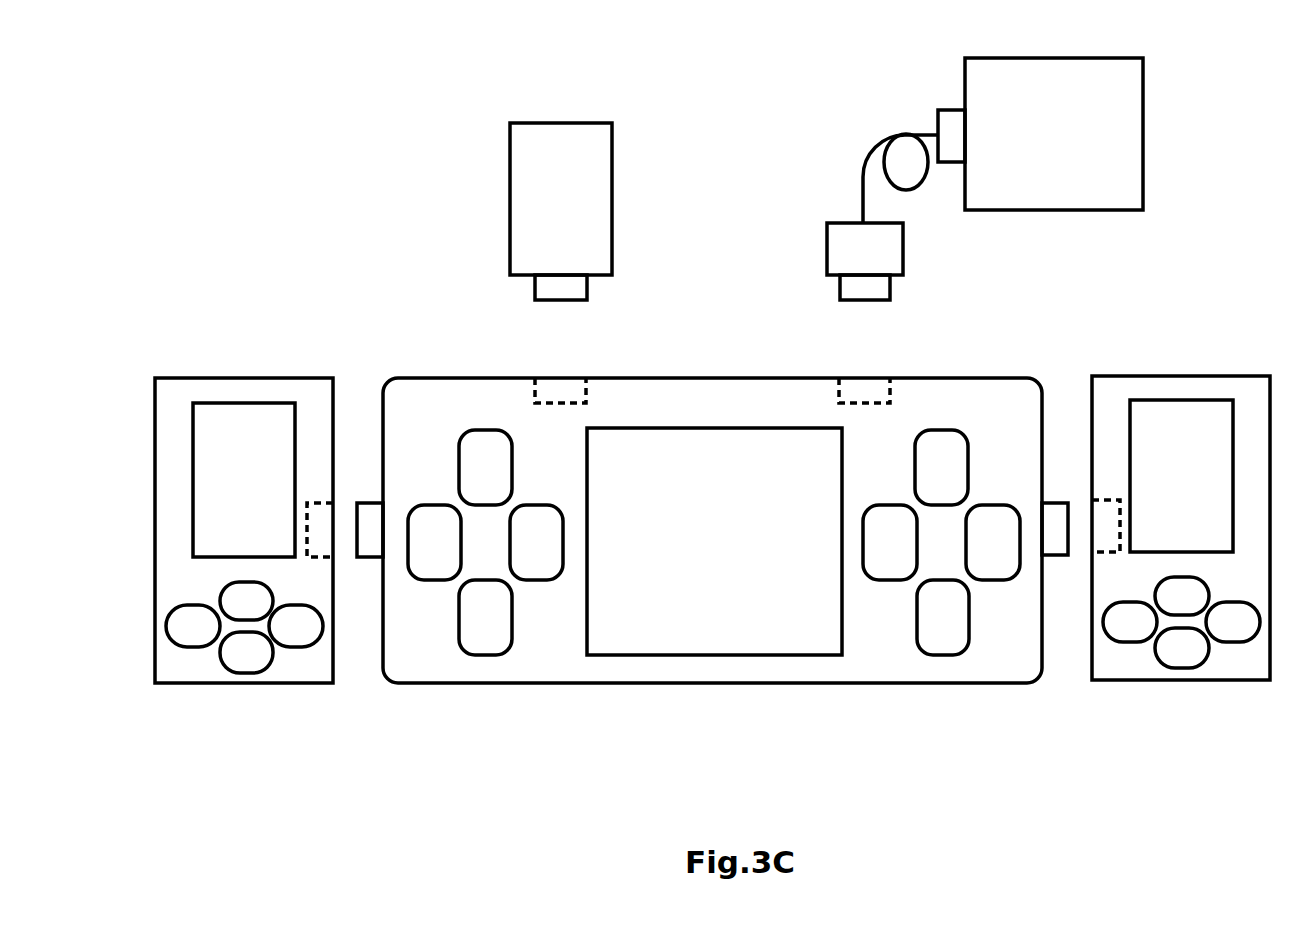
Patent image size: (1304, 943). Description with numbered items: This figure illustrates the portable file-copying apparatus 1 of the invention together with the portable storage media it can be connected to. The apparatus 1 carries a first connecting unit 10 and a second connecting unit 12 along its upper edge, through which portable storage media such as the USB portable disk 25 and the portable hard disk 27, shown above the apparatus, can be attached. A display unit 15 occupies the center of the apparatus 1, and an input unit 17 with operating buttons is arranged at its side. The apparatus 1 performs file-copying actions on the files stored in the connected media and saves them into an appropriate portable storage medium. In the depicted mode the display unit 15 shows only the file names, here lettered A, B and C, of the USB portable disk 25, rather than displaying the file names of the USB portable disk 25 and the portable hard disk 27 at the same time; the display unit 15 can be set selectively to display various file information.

The portable file-copying apparatus 1 is at (435, 378).
The first connecting unit 10 is at (548, 392).
The second connecting unit 12 is at (852, 392).
The display unit 15 is at (612, 656).
The input unit 17 is at (943, 656).
The USB portable disk 25 is at (510, 123).
The portable hard disk 27 is at (1143, 58).